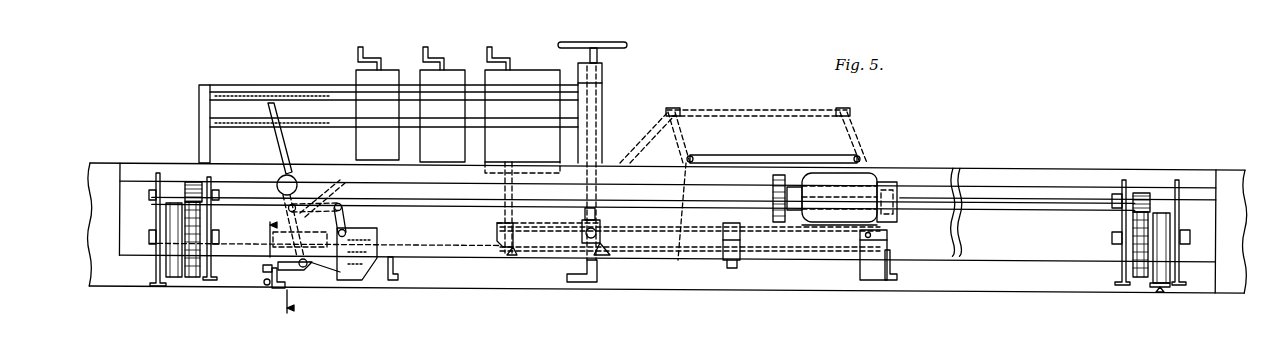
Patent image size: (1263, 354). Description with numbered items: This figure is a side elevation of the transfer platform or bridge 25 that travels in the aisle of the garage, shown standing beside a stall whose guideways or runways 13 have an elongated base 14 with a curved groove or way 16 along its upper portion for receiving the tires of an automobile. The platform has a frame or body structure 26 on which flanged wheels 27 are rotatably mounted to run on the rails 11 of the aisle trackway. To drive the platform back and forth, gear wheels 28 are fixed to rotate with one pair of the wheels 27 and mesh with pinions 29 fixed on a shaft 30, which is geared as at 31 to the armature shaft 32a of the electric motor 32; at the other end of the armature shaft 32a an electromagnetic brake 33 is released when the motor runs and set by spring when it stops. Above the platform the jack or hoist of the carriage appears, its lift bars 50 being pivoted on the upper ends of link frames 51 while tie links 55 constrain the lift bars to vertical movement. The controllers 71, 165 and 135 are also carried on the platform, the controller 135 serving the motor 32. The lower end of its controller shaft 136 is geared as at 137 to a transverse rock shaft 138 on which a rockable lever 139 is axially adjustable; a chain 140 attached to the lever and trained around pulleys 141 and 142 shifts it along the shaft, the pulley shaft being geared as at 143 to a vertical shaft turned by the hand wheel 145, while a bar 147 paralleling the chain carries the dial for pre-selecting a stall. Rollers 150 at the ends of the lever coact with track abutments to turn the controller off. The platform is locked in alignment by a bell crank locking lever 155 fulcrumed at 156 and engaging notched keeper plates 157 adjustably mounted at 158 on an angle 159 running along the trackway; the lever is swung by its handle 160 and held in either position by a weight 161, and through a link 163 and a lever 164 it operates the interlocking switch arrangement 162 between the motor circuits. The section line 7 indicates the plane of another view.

The section line 7- 7 is at (278, 272).
The rails 11 is at (1168, 290).
The guideways or runways 13 is at (99, 172).
The elongated base 14 is at (107, 287).
The groove or way 16 is at (121, 165).
The transfer platform or bridge 25 is at (920, 165).
The frame or body structure 26 is at (890, 283).
The flanged wheels 27 is at (170, 266).
The gear wheels 28 is at (193, 278).
The pinions 29 is at (192, 182).
The shaft 30 is at (463, 199).
The gearing 31 is at (772, 194).
The electric motor 32 is at (862, 180).
The armature shaft 32a is at (792, 190).
The electromagnetic brake 33 is at (900, 208).
The lift bars 50 is at (742, 108).
The link frame 51 is at (687, 152).
The bars or tie links 55 is at (640, 137).
The controller 71 is at (445, 72).
The controller 135 is at (521, 72).
The controller shaft 136 is at (515, 214).
The gearing 137 is at (516, 245).
The rock shaft 138 is at (674, 253).
The rockable lever 139 is at (744, 259).
The chain or flexible element 140 is at (690, 228).
The wheel or pulley 141 is at (612, 256).
The wheel or pulley 142 is at (862, 247).
The gearing 143 is at (600, 225).
The hand wheel 145 is at (622, 45).
The bar 147 is at (669, 211).
The rollers 150 is at (734, 269).
The bell crank locking lever 155 is at (288, 273).
The fulcrum 156 is at (306, 263).
The notched keeper plates 157 is at (263, 270).
The adjustable mounting 158 is at (265, 284).
The angle 159 is at (279, 290).
The handle 160 is at (272, 150).
The weight 161 is at (296, 178).
The interlocking switch arrangement 162 is at (372, 237).
The link 163 is at (331, 192).
The lever 164 is at (348, 225).
The controller 165 is at (386, 72).